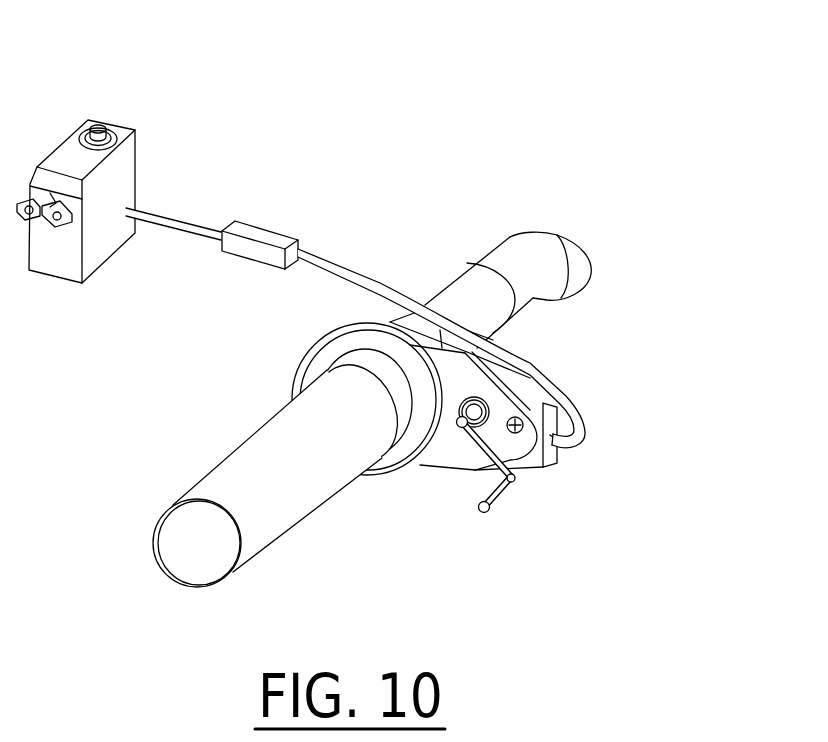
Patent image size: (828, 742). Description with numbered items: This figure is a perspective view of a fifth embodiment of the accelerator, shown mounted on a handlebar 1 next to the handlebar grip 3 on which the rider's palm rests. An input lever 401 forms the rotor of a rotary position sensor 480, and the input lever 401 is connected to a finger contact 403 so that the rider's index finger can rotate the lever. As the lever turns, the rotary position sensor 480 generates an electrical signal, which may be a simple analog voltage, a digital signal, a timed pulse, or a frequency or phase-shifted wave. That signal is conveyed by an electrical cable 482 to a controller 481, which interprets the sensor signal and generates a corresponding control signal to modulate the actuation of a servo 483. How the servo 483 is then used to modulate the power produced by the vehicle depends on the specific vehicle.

The handlebar 1 is at (520, 247).
The handlebar grip 3 is at (207, 490).
The input lever 401 is at (425, 470).
The finger contact 403 is at (495, 503).
The rotary position sensor 480 is at (550, 465).
The controller 481 is at (262, 235).
The electrical cable 482 is at (590, 422).
The servo 483 is at (68, 148).